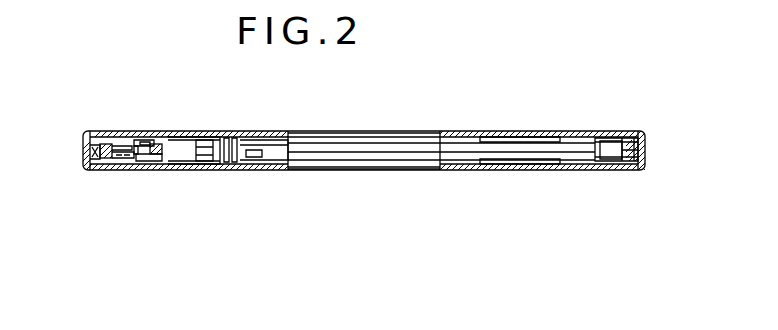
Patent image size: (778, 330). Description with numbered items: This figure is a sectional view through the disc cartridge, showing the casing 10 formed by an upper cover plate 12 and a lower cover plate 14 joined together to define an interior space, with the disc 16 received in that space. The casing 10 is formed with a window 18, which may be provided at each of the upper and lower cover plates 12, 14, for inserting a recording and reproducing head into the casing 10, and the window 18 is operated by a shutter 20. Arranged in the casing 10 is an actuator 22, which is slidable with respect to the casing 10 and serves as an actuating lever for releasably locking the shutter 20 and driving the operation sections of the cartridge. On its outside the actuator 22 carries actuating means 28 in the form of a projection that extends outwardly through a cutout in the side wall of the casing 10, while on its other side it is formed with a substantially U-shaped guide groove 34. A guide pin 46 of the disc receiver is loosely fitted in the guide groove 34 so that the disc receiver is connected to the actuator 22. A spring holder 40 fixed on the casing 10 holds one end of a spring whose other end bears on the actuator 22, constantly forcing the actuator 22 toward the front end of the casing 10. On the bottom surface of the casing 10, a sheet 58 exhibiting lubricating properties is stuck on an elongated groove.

The casing 10 is at (657, 127).
The upper cover plate 12 is at (200, 131).
The lower cover plate 14 is at (195, 170).
The disc 16 is at (400, 165).
The window 18 is at (377, 134).
The shutter 20 is at (430, 132).
The actuator 22 is at (150, 170).
The actuating means 28 is at (83, 152).
The guide groove 34 is at (125, 131).
The spring holder 40 is at (240, 131).
The guide pin 46 is at (152, 131).
The sheet 58 is at (535, 134).